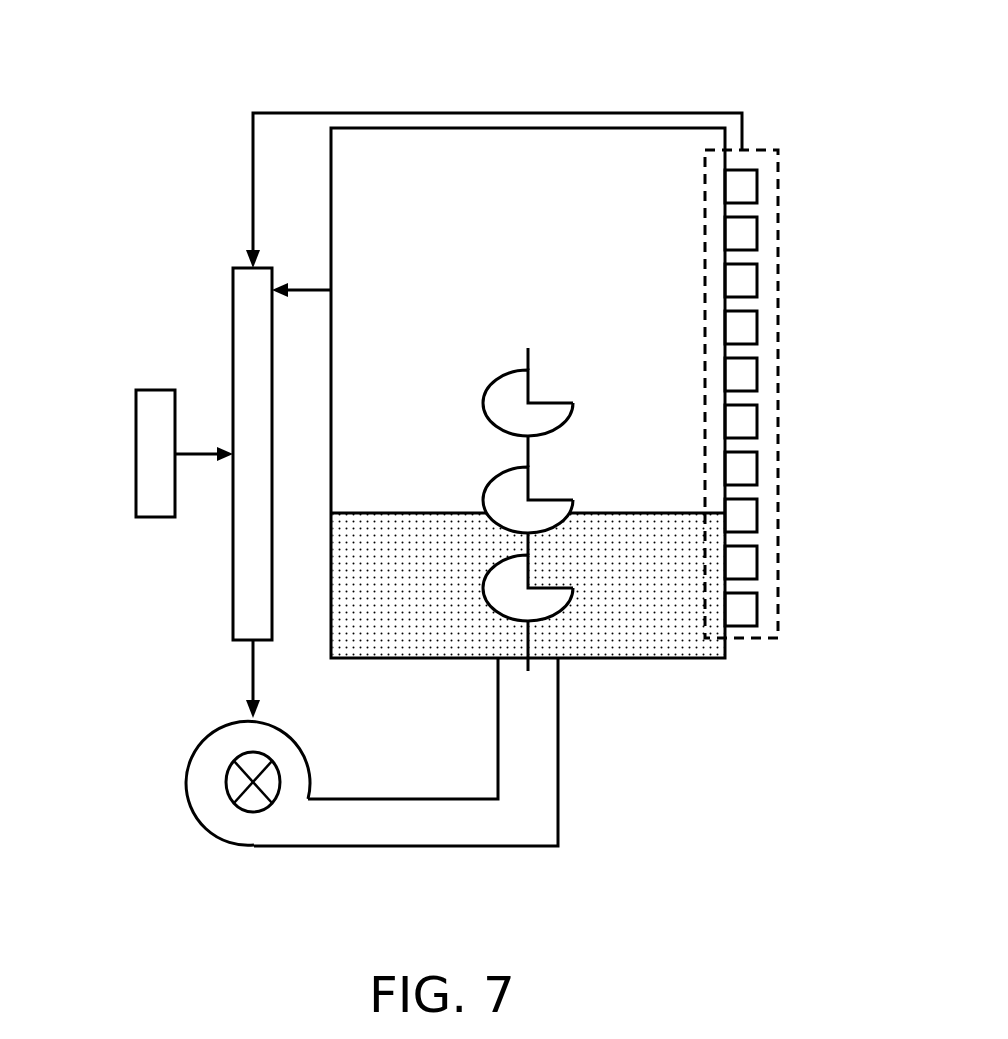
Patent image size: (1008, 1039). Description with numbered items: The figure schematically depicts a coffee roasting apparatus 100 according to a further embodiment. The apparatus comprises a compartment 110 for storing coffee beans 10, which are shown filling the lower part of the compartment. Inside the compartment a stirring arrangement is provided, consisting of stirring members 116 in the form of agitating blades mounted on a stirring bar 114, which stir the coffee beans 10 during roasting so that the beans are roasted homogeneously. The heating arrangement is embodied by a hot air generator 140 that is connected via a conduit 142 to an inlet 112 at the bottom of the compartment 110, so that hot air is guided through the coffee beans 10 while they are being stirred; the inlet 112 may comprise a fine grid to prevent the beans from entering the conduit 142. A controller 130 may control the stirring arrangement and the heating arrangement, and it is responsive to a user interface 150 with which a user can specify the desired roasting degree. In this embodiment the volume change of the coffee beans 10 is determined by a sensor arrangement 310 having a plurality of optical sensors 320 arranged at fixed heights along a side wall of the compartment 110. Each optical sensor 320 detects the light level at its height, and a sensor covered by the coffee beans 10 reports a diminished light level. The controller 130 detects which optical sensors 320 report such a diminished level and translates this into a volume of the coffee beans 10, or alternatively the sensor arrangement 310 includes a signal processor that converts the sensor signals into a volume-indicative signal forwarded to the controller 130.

The coffee roasting apparatus 100 is at (710, 778).
The compartment 110 is at (518, 143).
The coffee beans 10 is at (412, 648).
The inlet 112 is at (528, 663).
The stirring bar 114 is at (530, 350).
The stirring members 116 is at (492, 398).
The controller 130 is at (233, 305).
The user interface 150 is at (136, 415).
The hot air generator 140 is at (253, 837).
The conduit 142 is at (453, 837).
The sensor arrangement 310 is at (757, 638).
The optical sensors 320 is at (757, 610).